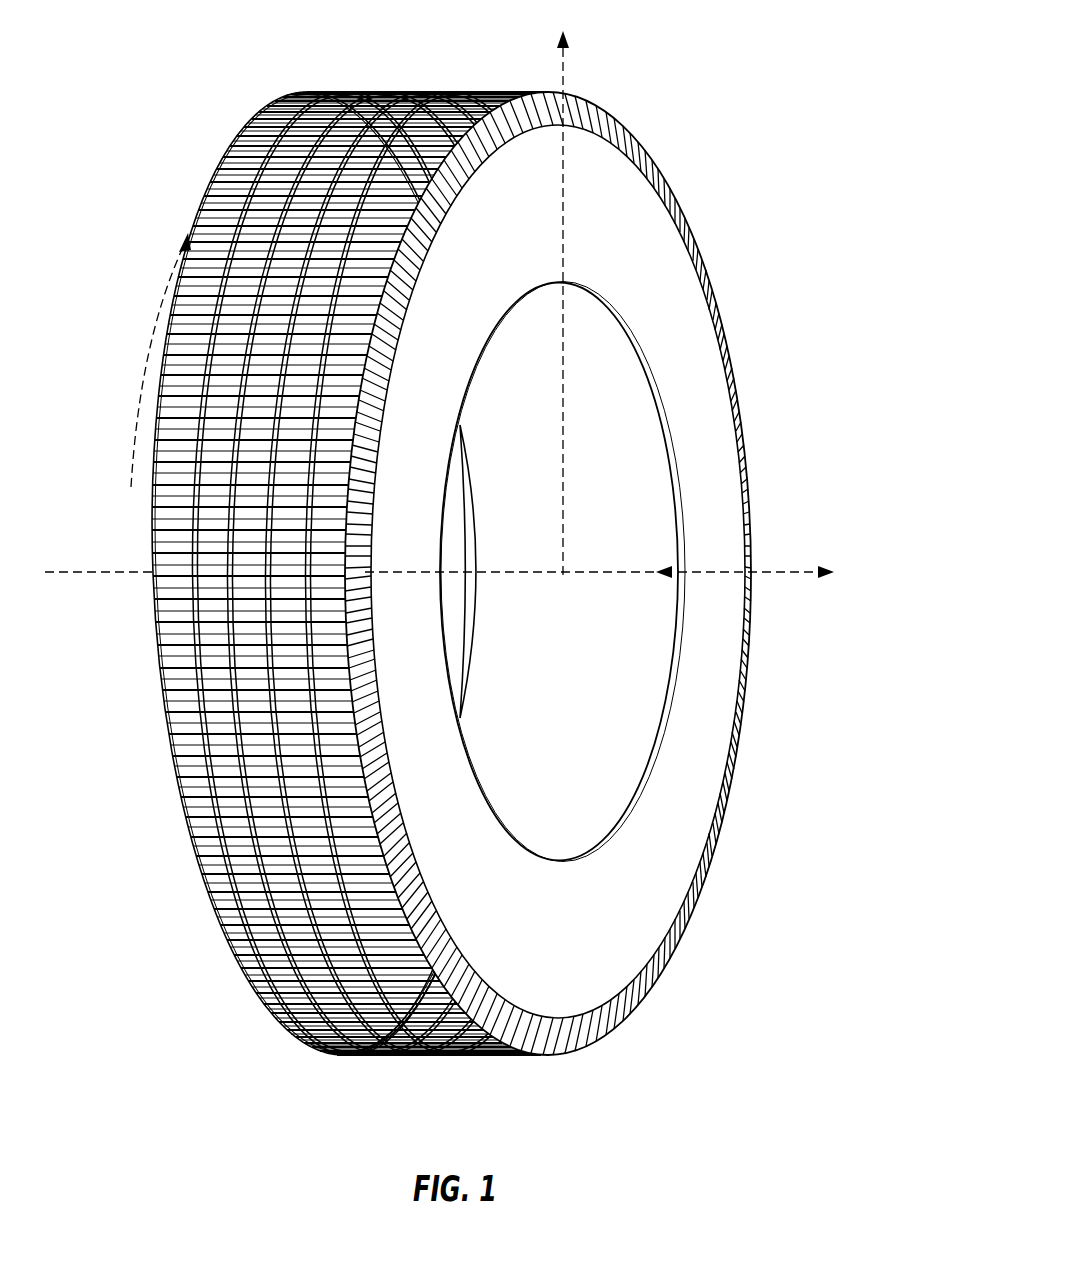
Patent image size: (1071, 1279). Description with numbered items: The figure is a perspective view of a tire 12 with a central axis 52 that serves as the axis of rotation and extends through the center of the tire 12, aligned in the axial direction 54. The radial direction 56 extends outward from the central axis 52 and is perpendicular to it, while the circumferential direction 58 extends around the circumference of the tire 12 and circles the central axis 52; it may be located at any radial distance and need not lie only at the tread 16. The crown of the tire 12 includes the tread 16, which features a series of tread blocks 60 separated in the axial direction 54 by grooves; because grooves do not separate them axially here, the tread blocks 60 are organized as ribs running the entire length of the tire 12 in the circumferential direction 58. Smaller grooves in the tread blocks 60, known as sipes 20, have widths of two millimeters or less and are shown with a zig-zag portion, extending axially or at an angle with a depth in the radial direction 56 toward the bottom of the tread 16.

The tire 12 is at (220, 58).
The tread 16 is at (195, 862).
The sipe 20 is at (287, 593).
The central axis 52 is at (483, 577).
The axial direction 54 is at (776, 572).
The radial direction 56 is at (565, 68).
The circumferential direction 58 is at (148, 358).
The tread block 60 is at (303, 740).